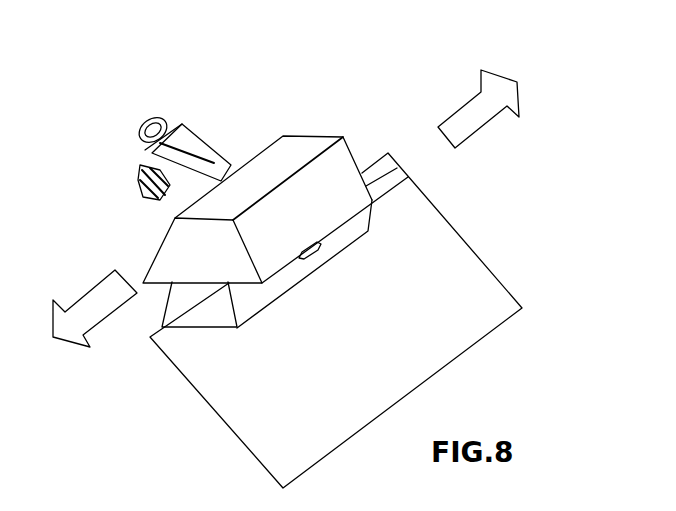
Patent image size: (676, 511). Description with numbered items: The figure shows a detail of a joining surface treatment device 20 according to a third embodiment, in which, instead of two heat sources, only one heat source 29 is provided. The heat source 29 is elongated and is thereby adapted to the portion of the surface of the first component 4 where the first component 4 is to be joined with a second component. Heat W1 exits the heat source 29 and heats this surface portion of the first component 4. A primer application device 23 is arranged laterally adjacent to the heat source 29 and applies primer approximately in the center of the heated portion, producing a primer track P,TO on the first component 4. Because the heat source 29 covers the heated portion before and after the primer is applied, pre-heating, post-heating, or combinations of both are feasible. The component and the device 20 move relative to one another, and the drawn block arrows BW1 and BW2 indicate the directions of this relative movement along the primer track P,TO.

The joining surface treatment device 20 is at (339, 58).
The first component 4 is at (452, 346).
The primer track P,TO is at (400, 172).
The heat source 29 is at (264, 170).
The heat W1 is at (218, 313).
The primer application device 23 is at (142, 160).
The direction of movement BW1 is at (469, 106).
The direction of movement BW2 is at (95, 295).